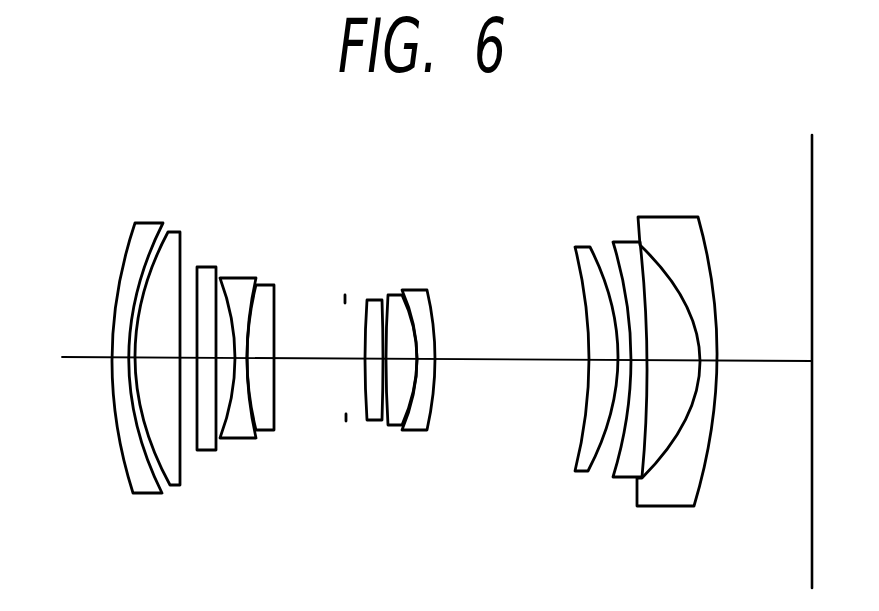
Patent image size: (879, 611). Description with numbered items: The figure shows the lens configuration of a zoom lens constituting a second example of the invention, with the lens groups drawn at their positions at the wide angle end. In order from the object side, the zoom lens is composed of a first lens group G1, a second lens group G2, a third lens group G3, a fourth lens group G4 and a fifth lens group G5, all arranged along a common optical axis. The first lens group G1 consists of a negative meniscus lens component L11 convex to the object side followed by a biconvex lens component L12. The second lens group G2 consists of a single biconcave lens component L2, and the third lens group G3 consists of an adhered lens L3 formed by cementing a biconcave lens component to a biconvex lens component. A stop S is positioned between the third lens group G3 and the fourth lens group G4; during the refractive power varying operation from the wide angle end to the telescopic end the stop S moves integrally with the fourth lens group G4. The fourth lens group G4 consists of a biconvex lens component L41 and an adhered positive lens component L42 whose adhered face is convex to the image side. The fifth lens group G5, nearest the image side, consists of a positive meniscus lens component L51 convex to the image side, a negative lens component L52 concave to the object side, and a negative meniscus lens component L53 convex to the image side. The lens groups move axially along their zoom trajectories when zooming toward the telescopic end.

The first lens group G1 is at (187, 192).
The second lens group G2 is at (218, 192).
The third lens group G3 is at (277, 192).
The fourth lens group G4 is at (442, 192).
The fifth lens group G5 is at (705, 192).
The negative meniscus lens component L11 is at (145, 496).
The biconvex lens component L12 is at (175, 485).
The biconcave lens component L2 is at (205, 450).
The adhered lens L3 is at (247, 438).
The stop S is at (347, 420).
The biconvex lens component L41 is at (373, 420).
The adhered positive lens component L42 is at (418, 430).
The positive meniscus lens component L51 is at (580, 475).
The negative lens component L52 is at (622, 480).
The negative meniscus lens component L53 is at (683, 507).